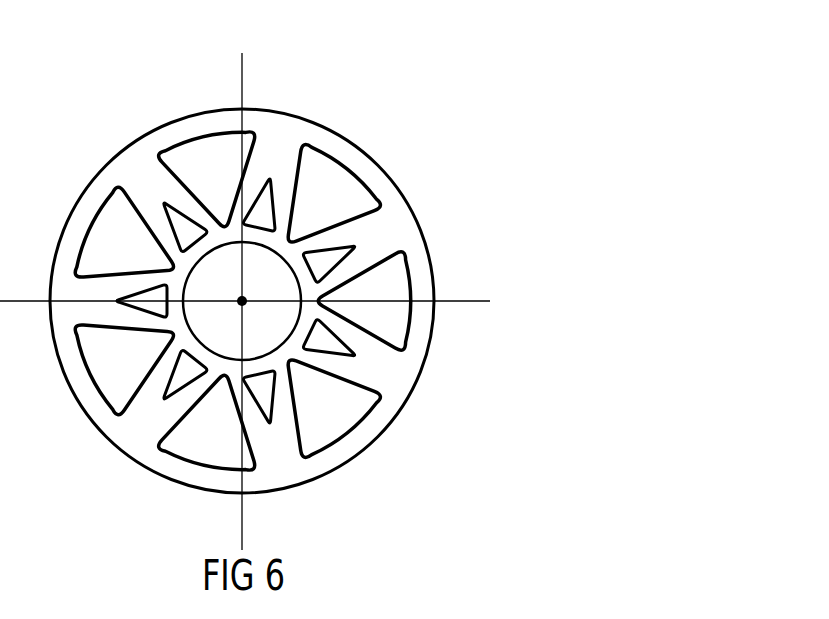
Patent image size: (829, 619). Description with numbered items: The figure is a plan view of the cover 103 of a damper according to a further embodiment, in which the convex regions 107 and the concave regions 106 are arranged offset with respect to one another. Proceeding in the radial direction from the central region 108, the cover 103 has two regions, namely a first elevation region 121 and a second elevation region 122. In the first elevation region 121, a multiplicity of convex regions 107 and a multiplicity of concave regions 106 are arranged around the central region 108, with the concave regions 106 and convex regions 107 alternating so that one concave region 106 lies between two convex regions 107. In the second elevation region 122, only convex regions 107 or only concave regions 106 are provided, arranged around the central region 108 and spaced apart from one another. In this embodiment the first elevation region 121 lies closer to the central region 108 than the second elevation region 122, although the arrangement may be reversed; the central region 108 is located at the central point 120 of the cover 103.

The cover 103 is at (368, 128).
The concave regions 106 is at (345, 240).
The convex regions 107 is at (352, 192).
The central region 108 is at (242, 301).
The central point 120 is at (243, 303).
The first elevation region 121 is at (175, 218).
The second elevation region 122 is at (135, 176).